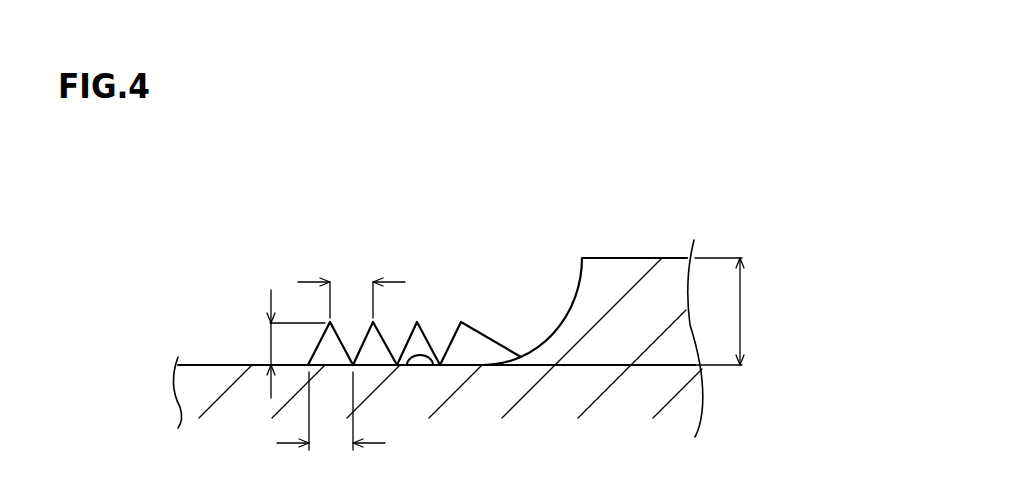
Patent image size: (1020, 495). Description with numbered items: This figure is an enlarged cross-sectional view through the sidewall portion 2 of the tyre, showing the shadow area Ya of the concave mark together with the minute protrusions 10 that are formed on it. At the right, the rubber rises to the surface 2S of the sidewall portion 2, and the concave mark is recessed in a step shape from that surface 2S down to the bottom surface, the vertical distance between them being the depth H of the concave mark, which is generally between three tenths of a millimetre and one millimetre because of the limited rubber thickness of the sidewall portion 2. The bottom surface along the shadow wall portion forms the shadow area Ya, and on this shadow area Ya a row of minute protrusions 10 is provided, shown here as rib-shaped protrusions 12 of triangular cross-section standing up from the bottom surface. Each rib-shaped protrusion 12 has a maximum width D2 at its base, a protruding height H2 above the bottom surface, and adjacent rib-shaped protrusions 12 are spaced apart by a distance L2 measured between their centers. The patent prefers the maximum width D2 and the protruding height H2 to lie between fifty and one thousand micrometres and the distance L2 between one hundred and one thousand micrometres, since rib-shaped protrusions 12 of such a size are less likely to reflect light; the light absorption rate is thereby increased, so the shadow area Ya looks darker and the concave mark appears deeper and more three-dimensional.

The sidewall portion 2 is at (457, 290).
The surface of the sidewall portion 2S is at (623, 257).
The minute protrusions 10 is at (426, 271).
The rib-shaped protrusions 12 is at (460, 352).
The shadow area Ya is at (431, 361).
The depth of the concave mark H is at (729, 311).
The protruding height H2 is at (276, 344).
The distance between centers of adjacent rib-shaped protrusions L2 is at (351, 284).
The maximum width D2 is at (331, 423).